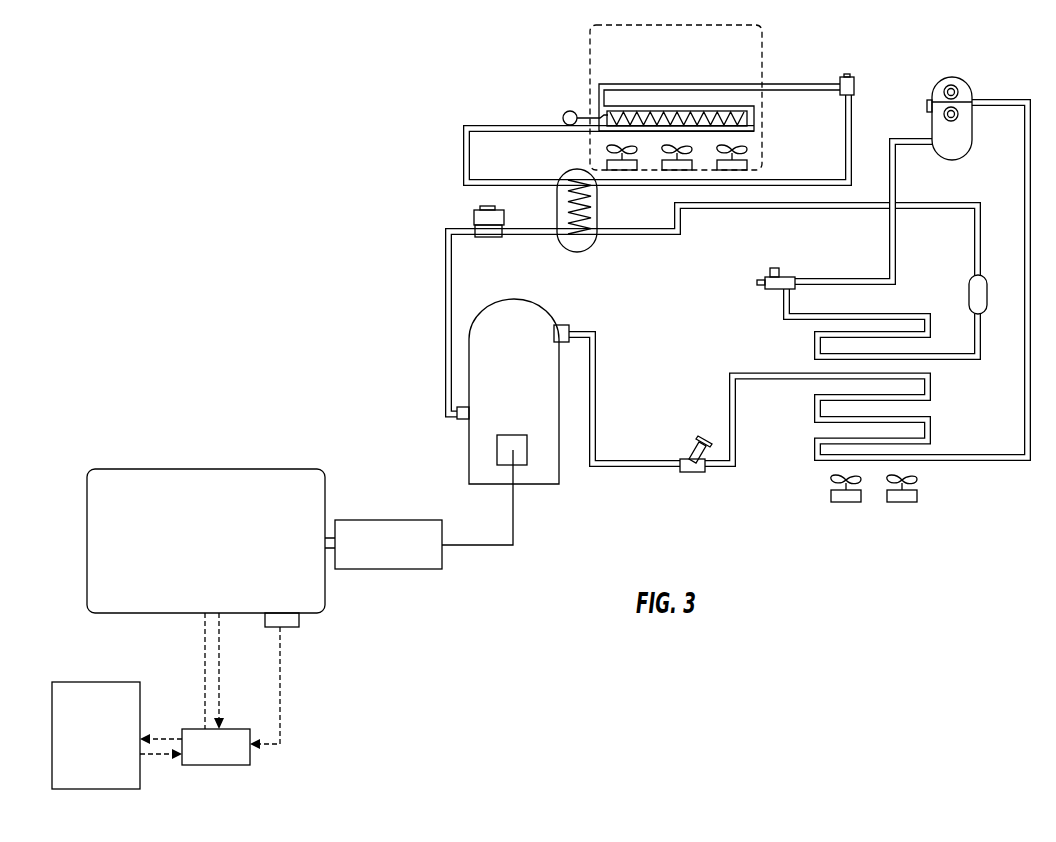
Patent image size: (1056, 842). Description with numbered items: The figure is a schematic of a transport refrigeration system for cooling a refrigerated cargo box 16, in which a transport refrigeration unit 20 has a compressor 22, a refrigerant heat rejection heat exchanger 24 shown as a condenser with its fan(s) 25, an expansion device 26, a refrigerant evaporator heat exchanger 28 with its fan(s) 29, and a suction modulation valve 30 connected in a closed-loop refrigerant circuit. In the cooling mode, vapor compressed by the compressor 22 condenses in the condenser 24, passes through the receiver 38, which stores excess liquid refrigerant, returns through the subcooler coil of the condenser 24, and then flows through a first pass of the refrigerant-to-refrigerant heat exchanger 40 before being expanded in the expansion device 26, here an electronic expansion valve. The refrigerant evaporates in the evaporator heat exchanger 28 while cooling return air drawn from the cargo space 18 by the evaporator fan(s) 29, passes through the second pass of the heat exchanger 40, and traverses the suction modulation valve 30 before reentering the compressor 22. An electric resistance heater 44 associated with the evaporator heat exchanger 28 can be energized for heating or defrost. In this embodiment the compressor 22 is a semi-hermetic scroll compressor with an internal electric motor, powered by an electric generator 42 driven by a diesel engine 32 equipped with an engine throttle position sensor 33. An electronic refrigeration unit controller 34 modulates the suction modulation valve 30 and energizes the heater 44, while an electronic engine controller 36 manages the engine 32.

The refrigerated cargo box 16 is at (762, 107).
The cargo space 18 is at (676, 97).
The transport refrigeration unit 20 is at (972, 60).
The compressor 22 is at (557, 468).
The refrigerant heat rejection heat exchanger 24 is at (940, 383).
The condenser fan 25 is at (828, 493).
The expansion device 26 is at (855, 82).
The refrigerant evaporator heat exchanger 28 is at (700, 79).
The evaporator fan 29 is at (662, 166).
The suction modulation valve 30 is at (490, 235).
The diesel engine 32 is at (202, 467).
The engine throttle position sensor 33 is at (290, 625).
The electronic refrigeration unit controller 34 is at (100, 680).
The electronic engine controller 36 is at (222, 763).
The receiver 38 is at (972, 135).
The refrigerant-to-refrigerant heat exchanger 40 is at (597, 208).
The electric generator 42 is at (410, 567).
The electric resistance heater 44 is at (567, 108).